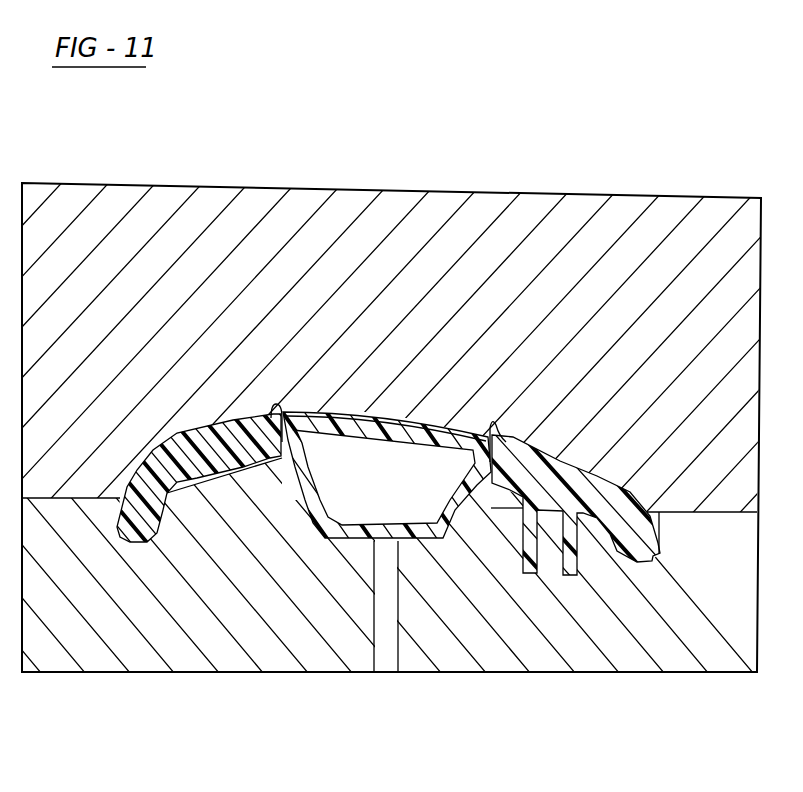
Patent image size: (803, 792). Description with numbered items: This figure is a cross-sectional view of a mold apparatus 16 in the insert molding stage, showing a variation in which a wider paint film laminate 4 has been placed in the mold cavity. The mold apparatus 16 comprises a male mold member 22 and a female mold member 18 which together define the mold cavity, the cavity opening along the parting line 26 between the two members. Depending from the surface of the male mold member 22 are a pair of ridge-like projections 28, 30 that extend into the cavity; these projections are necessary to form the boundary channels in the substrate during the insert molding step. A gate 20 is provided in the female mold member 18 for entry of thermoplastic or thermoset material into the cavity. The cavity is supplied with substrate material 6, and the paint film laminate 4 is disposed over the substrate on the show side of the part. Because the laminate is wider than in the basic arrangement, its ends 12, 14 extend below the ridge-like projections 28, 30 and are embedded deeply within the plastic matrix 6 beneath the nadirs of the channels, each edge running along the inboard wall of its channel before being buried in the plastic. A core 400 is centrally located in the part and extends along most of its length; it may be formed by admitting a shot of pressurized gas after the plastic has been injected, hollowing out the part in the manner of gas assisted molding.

The paint film laminate 4 is at (404, 411).
The substrate material 6 is at (418, 533).
The first edge of paint film 12 is at (282, 456).
The second edge of paint film 14 is at (488, 510).
The mold apparatus 16 is at (152, 684).
The female mold member 18 is at (227, 653).
The gate 20 is at (383, 660).
The male mold member 22 is at (389, 210).
The parting line 26 is at (66, 503).
The first ridge-like projection 28 is at (270, 410).
The second ridge-like projection 30 is at (508, 433).
The core 400 is at (389, 488).